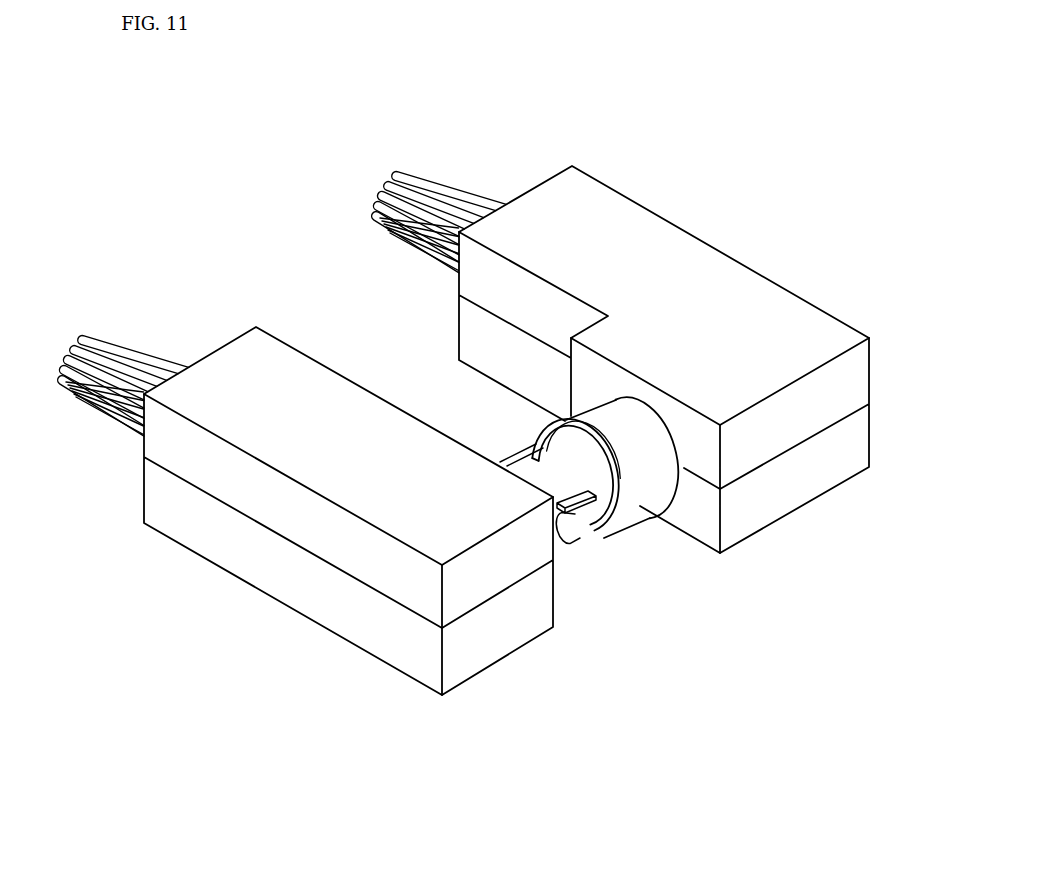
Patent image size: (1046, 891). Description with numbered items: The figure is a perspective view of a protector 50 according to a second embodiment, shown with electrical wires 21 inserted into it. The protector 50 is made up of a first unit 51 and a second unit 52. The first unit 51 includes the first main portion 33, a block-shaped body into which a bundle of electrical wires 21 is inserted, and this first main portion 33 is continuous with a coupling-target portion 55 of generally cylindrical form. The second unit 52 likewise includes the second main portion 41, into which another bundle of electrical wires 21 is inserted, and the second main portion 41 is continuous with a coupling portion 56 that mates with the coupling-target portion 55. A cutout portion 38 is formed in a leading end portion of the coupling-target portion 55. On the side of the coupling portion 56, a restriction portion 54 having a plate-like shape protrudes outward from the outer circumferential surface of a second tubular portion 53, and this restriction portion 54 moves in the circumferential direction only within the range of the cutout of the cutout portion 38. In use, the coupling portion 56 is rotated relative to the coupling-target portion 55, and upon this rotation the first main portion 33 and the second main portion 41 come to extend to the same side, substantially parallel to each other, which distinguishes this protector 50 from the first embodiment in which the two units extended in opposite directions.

The electrical wires 21 is at (110, 332).
The first main portion 33 is at (718, 217).
The cutout portion 38 is at (553, 430).
The second main portion 41 is at (292, 582).
The protector 50 is at (664, 302).
The first unit 51 is at (664, 359).
The second unit 52 is at (348, 549).
The second tubular portion 53 is at (557, 537).
The restriction portion 54 is at (582, 505).
The coupling-target portion 55 is at (662, 465).
The coupling portion 56 is at (533, 465).